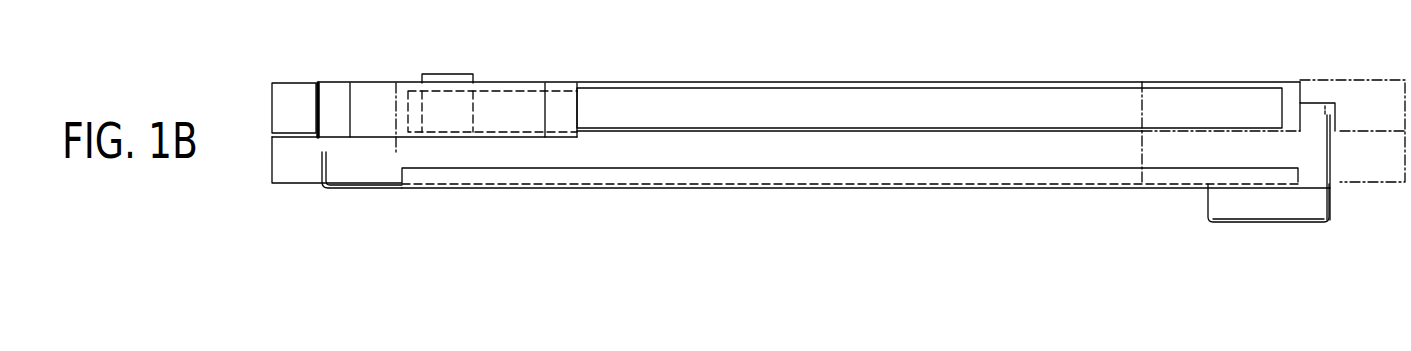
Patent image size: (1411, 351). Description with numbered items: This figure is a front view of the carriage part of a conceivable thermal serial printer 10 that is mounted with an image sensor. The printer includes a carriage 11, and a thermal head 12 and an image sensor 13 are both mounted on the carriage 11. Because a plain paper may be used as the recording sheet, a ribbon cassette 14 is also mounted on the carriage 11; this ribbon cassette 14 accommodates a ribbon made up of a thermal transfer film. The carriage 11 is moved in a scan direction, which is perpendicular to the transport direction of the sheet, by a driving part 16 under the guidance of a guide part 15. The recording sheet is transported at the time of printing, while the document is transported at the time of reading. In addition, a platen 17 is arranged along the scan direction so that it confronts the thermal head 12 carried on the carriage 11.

The thermal serial printer 10 is at (724, 35).
The carriage 11 is at (298, 186).
The thermal head 12 is at (443, 74).
The image sensor 13 is at (289, 82).
The ribbon cassette 14 is at (373, 95).
The guide part 15 is at (702, 186).
The driving part 16 is at (1270, 213).
The platen 17 is at (896, 108).